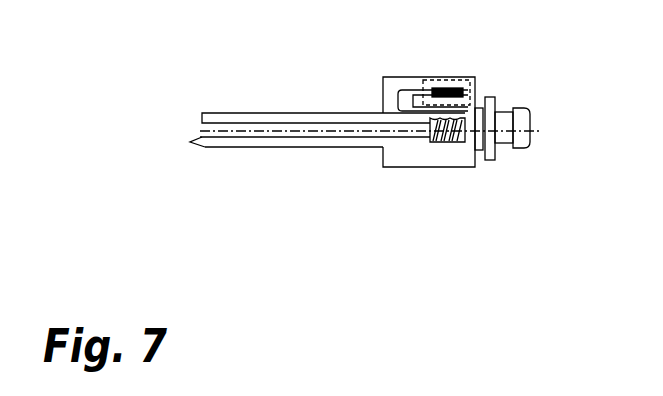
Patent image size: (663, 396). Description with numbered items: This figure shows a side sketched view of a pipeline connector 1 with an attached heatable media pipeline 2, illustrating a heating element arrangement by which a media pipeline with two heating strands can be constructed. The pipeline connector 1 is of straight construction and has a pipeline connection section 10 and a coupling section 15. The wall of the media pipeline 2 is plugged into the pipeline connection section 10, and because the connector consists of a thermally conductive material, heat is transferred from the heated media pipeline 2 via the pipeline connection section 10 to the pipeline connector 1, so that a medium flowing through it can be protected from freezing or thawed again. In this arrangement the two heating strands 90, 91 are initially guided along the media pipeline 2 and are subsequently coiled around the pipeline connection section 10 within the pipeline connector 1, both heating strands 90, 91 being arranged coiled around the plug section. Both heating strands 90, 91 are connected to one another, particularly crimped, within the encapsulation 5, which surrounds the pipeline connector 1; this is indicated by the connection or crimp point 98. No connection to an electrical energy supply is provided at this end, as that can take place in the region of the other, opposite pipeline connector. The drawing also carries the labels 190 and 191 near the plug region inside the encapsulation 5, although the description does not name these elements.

The pipeline connector 1 is at (517, 95).
The media pipeline 2 is at (272, 112).
The encapsulation 5 is at (398, 162).
The pipeline connection section 10 is at (458, 150).
The coupling section 15 is at (507, 158).
The heating strand 90 is at (202, 122).
The heating strand 91 is at (205, 134).
The connection or crimp point 98 is at (455, 87).
The inner sleeve 190 is at (425, 90).
The plug 191 is at (413, 90).